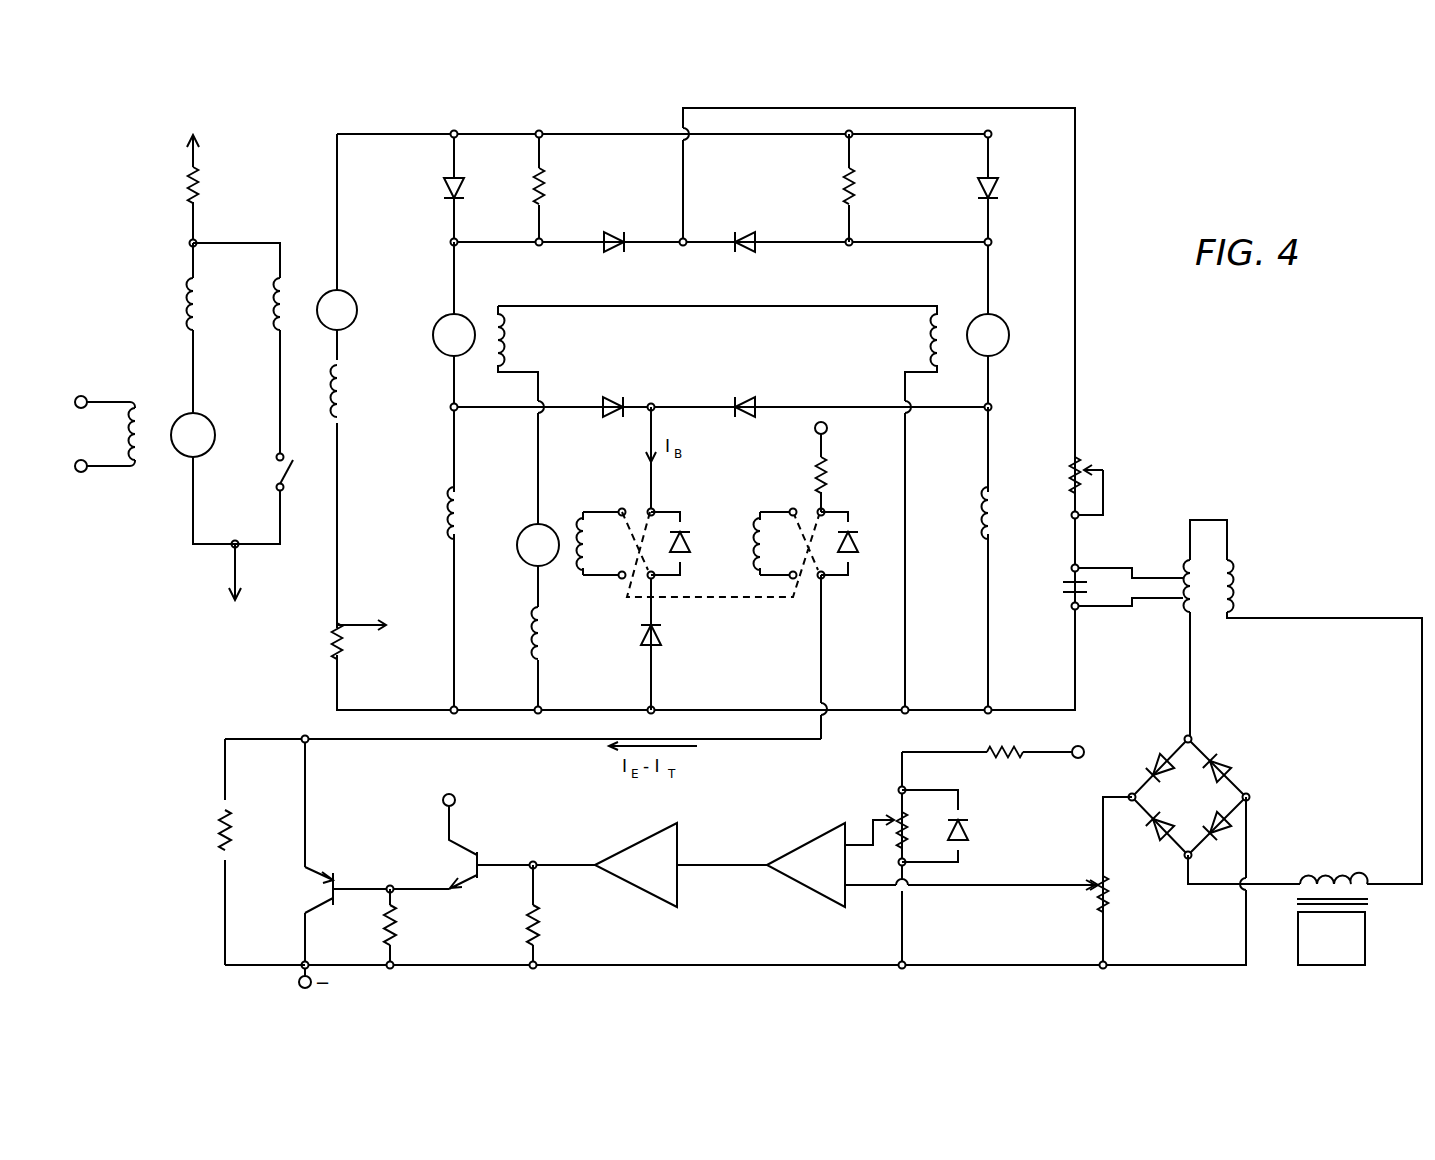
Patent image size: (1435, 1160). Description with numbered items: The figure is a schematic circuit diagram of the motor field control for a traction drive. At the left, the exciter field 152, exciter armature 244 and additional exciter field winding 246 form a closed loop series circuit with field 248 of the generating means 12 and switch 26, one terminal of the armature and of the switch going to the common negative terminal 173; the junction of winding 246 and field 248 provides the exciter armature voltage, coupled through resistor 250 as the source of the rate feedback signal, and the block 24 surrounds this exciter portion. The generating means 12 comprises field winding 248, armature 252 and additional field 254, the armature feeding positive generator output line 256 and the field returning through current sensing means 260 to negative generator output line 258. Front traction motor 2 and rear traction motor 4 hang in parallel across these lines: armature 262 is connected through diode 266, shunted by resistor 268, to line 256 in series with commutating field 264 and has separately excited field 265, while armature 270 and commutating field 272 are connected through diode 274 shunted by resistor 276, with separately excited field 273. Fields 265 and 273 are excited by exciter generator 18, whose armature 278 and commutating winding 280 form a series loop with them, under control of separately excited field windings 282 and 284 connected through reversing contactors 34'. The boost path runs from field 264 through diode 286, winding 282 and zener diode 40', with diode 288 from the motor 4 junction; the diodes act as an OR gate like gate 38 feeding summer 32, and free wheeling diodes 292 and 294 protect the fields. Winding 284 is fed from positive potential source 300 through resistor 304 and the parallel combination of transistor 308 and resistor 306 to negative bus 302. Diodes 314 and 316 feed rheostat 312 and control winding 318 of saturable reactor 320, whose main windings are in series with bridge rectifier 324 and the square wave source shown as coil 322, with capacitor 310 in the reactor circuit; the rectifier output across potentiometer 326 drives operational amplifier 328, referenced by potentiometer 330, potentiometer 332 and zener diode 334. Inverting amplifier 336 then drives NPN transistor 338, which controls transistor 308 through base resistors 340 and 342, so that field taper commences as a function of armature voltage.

The front traction motor 2 is at (429, 339).
The rear traction motor 4 is at (1002, 428).
The generating means 12 is at (258, 418).
The exciter generator 18 is at (507, 598).
The rate feedback circuit 24 is at (211, 446).
The switch 26 is at (290, 472).
The summer 32 is at (701, 550).
The reversing contactors 34' is at (790, 580).
The OR gate 38 is at (695, 386).
The zener diode 40' is at (680, 637).
The exciter field 152 is at (140, 460).
The negative terminal 173 is at (240, 572).
The exciter armature 244 is at (210, 452).
The exciter field winding 246 is at (200, 312).
The generator field winding 248 is at (275, 322).
The resistor 250 is at (205, 182).
The generator armature 252 is at (352, 296).
The additional generator field 254 is at (347, 405).
The positive generator output line 256 is at (388, 140).
The negative generator output line 258 is at (388, 698).
The current sensing means 260 is at (330, 638).
The armature 262 is at (468, 320).
The commutating field 264 is at (446, 525).
The separately excited field 265 is at (510, 335).
The diode 266 is at (465, 185).
The resistor 268 is at (550, 180).
The armature 270 is at (1005, 322).
The commutating field 272 is at (998, 518).
The separately excited field 273 is at (925, 335).
The diode 274 is at (840, 180).
The resistor 276 is at (975, 188).
The exciter armature 278 is at (525, 528).
The commutating winding 280 is at (530, 650).
The exciter boost field winding 282 is at (580, 580).
The exciter field winding 284 is at (757, 520).
The diode 286 is at (600, 420).
The diode 288 is at (750, 395).
The free wheeling diode 292 is at (688, 545).
The free wheeling diode 294 is at (856, 530).
The positive potential source 300 is at (814, 430).
The negative bus 302 is at (258, 935).
The resistor 304 is at (830, 468).
The resistor 306 is at (215, 838).
The PNP transistor 308 is at (322, 889).
The capacitor 310 is at (1060, 590).
The rheostat 312 is at (1092, 470).
The diode 314 is at (616, 230).
The diode 316 is at (752, 230).
The control winding 318 is at (1240, 584).
The saturable reactor 320 is at (1330, 751).
The oscillator coil 322 is at (1335, 870).
The bridge rectifier 324 is at (1189, 797).
The potentiometer 326 is at (1110, 910).
The operational amplifier 328 is at (795, 842).
The potentiometer 330 is at (888, 815).
The potentiometer 332 is at (1020, 762).
The zener diode 334 is at (970, 833).
The inverting amplifier 336 is at (625, 842).
The NPN transistor 338 is at (470, 862).
The base resistor 340 is at (543, 915).
The base resistor 342 is at (398, 925).